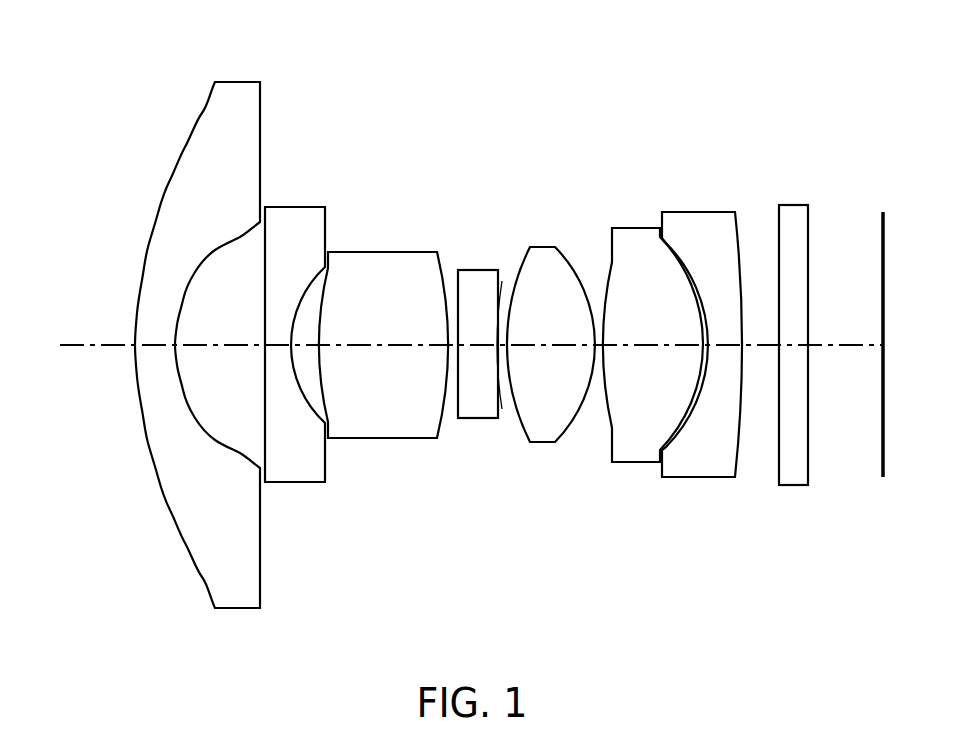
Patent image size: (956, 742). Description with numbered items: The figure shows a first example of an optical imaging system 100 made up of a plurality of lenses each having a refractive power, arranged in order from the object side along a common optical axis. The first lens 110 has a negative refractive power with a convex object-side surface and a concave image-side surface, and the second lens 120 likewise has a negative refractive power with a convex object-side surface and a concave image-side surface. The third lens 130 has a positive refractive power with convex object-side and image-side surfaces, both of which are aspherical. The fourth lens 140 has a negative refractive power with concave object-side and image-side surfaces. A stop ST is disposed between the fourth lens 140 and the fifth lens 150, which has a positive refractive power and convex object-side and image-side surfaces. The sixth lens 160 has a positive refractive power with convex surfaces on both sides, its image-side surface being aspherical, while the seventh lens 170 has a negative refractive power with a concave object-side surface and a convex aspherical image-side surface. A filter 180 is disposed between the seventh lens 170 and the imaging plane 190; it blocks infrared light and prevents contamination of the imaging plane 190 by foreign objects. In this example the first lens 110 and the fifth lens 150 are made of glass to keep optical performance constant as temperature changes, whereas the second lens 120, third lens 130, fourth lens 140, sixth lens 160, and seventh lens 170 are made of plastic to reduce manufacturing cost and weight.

The optical imaging system 100 is at (527, 110).
The first lens 110 is at (238, 80).
The second lens 120 is at (297, 207).
The third lens 130 is at (383, 252).
The fourth lens 140 is at (480, 270).
The stop ST is at (500, 412).
The fifth lens 150 is at (543, 247).
The sixth lens 160 is at (637, 228).
The seventh lens 170 is at (697, 212).
The filter 180 is at (793, 205).
The imaging plane 190 is at (880, 462).